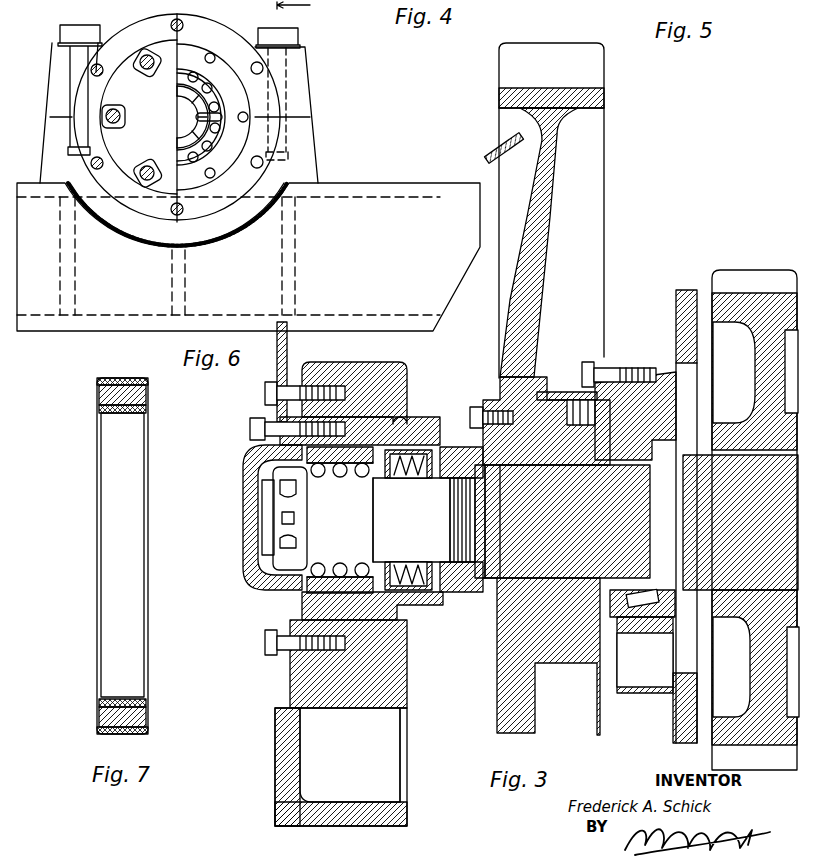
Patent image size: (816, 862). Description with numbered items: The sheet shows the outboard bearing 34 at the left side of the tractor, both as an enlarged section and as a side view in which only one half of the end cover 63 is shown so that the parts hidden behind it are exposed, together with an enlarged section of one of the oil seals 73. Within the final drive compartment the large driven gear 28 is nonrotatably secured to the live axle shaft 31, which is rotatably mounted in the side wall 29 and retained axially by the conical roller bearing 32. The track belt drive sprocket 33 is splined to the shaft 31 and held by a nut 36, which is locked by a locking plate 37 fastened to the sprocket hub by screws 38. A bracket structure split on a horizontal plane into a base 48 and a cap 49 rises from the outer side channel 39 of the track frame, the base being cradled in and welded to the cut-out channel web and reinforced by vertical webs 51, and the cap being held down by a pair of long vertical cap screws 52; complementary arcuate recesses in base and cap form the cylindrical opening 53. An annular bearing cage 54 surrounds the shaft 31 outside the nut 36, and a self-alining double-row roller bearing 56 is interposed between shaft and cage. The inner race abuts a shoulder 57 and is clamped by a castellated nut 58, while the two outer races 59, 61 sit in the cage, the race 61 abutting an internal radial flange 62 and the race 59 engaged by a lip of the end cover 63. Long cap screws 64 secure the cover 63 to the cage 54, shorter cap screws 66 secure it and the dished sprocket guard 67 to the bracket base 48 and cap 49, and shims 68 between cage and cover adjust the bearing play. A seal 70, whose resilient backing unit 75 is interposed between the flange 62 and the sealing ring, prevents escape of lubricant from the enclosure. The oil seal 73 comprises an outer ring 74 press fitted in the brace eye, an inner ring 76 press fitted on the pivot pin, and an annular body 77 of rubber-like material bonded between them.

In FIG. 3, the large driven gear 28 is at (754, 345).
In FIG. 3, the side wall 29 is at (676, 303).
In FIG. 6, the live axle shaft 31 is at (180, 104).
In FIG. 3, the live axle shaft 31 is at (433, 514).
In FIG. 3, the conical roller bearing 32 is at (653, 666).
In FIG. 3, the track belt drive sprocket 33 is at (604, 148).
In FIG. 6, the outboard bearing 34 is at (248, 28).
In FIG. 3, the outboard bearing 34 is at (425, 392).
In FIG. 3, the nut 36 is at (445, 606).
In FIG. 3, the locking plate 37 is at (481, 400).
In FIG. 3, the screws 38 is at (470, 414).
In FIG. 6, the outer side channel 39 is at (390, 188).
In FIG. 3, the outer side channel 39 is at (277, 744).
In FIG. 6, the bracket base 48 is at (316, 156).
In FIG. 3, the bracket base 48 is at (408, 667).
In FIG. 6, the cap 49 is at (311, 84).
In FIG. 3, the cap 49 is at (379, 368).
In FIG. 6, the vertical webs 51 is at (75, 300).
In FIG. 3, the vertical webs 51 is at (401, 760).
In FIG. 6, the cap screws 52 is at (80, 24).
In FIG. 3, the cylindrical opening 53 is at (407, 422).
In FIG. 6, the bearing cage 54 is at (200, 185).
In FIG. 3, the bearing cage 54 is at (405, 615).
In FIG. 6, the double-row roller bearing 56 is at (222, 113).
In FIG. 3, the double-row roller bearing 56 is at (335, 476).
In FIG. 3, the shoulder 57 is at (377, 527).
In FIG. 6, the castellated nut 58 is at (178, 144).
In FIG. 3, the castellated nut 58 is at (297, 522).
In FIG. 6, the outer race 59 is at (215, 140).
In FIG. 3, the outer race 59 is at (318, 563).
In FIG. 3, the outer race 61 is at (362, 570).
In FIG. 3, the internal radial flange 62 is at (390, 478).
In FIG. 6, the end cover 63 is at (150, 24).
In FIG. 3, the end cover 63 is at (243, 552).
In FIG. 6, the cap screws 64 is at (126, 116).
In FIG. 3, the cap screws 64 is at (250, 430).
In FIG. 6, the cap screws 66 is at (100, 64).
In FIG. 3, the cap screws 66 is at (265, 393).
In FIG. 3, the guard 67 is at (489, 160).
In FIG. 3, the shims 68 is at (277, 614).
In FIG. 3, the seal 70 is at (441, 566).
In FIG. 7, the oil seal 73 is at (132, 544).
In FIG. 7, the outer ring 74 is at (127, 378).
In FIG. 3, the resilient backing unit 75 is at (445, 452).
In FIG. 7, the inner ring 76 is at (123, 413).
In FIG. 7, the annular body 77 is at (99, 395).